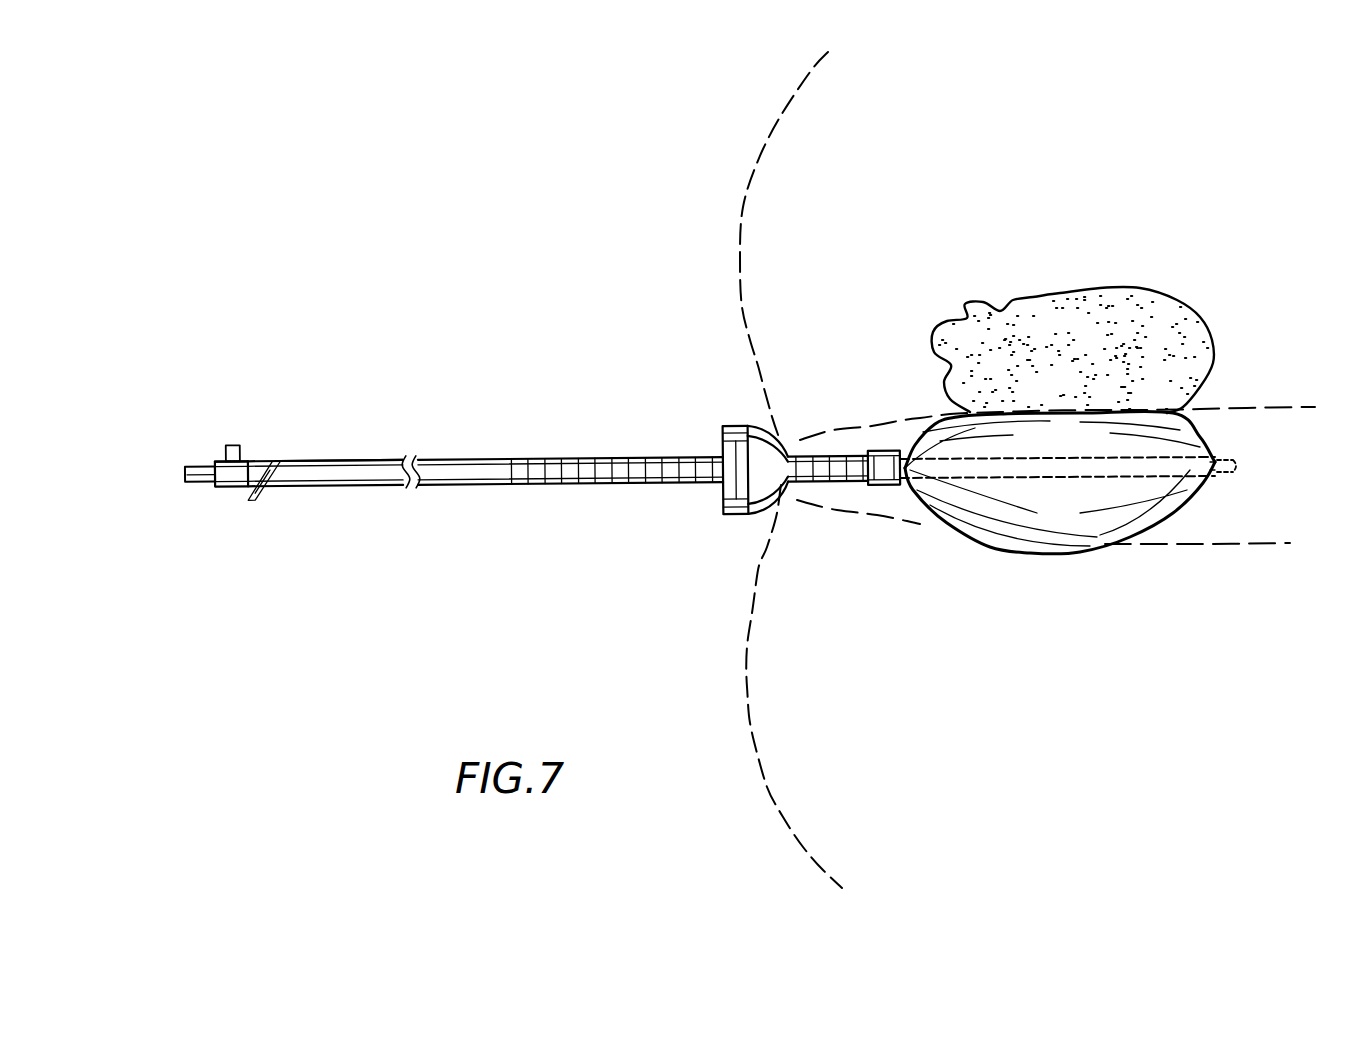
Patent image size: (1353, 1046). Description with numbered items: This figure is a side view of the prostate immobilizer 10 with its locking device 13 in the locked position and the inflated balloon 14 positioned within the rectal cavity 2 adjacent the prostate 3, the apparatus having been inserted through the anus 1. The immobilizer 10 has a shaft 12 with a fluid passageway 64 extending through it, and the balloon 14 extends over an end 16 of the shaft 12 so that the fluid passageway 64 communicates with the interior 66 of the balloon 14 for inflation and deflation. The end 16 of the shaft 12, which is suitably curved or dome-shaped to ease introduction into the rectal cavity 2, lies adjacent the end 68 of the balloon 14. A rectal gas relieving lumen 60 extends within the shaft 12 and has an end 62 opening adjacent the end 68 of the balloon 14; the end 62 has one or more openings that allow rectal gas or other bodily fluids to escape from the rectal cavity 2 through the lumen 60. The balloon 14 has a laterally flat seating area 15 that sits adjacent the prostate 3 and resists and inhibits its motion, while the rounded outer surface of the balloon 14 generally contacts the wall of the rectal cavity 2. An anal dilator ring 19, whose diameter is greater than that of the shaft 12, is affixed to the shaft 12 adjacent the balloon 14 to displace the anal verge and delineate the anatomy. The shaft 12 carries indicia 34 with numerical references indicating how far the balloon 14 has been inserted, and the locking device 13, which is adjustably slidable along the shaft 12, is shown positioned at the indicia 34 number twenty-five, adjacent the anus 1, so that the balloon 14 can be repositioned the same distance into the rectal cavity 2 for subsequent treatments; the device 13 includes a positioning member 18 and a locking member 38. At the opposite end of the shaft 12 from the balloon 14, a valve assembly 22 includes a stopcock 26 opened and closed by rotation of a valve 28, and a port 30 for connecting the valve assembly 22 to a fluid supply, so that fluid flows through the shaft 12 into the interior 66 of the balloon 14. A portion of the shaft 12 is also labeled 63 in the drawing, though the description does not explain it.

The anus 1 is at (780, 440).
The rectal cavity 2 is at (920, 517).
The prostate 3 is at (1083, 297).
The prostate immobilizer 10 is at (517, 403).
The shaft 12 is at (492, 457).
The locking device 13 is at (758, 433).
The balloon 14 is at (1187, 412).
The seating area 15 is at (1043, 412).
The end of the shaft 16 is at (1172, 482).
The positioning member 18 is at (765, 510).
The anal dilator ring 19 is at (885, 488).
The valve assembly 22 is at (238, 445).
The stopcock 26 is at (230, 487).
The valve 28 is at (223, 452).
The port 30 is at (197, 485).
The indicia 34 is at (702, 457).
The locking member 38 is at (733, 495).
The rectal gas relieving lumen 60 is at (500, 487).
The end of the lumen 62 is at (1227, 465).
The shaft proximal section 63 is at (333, 485).
The fluid passageway 64 is at (455, 490).
The interior of the balloon 66 is at (1053, 533).
The end of the balloon 68 is at (1137, 540).